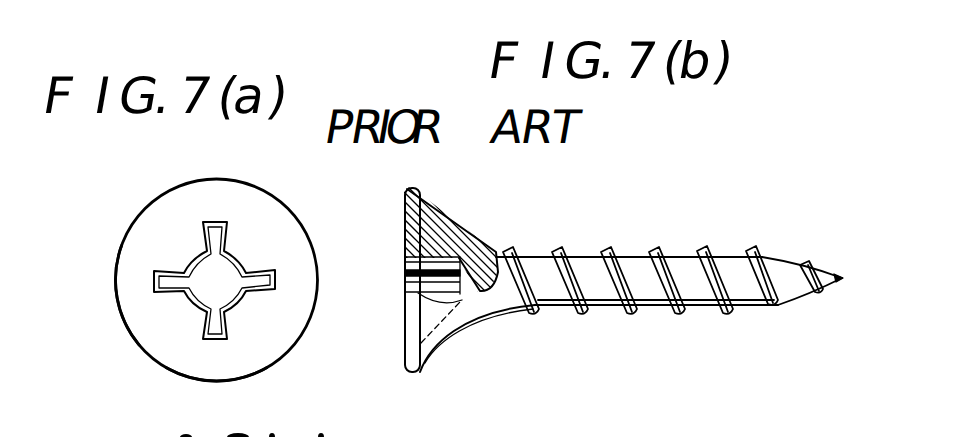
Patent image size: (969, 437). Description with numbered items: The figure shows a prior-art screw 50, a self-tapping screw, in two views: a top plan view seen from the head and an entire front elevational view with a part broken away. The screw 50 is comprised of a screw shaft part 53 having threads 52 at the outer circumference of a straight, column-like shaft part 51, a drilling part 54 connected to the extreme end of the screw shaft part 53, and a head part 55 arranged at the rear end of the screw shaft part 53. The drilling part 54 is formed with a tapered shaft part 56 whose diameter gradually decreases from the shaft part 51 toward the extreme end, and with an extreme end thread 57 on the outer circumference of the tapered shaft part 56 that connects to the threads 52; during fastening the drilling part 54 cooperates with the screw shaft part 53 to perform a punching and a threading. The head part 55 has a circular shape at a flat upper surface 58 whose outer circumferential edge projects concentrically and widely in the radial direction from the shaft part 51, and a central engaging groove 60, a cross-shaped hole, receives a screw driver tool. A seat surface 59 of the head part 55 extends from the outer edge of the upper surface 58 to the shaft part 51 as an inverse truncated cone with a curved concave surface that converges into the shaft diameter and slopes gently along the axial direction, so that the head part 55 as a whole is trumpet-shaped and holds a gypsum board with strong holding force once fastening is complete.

In FIG. 7a, the screw 50 is at (300, 213).
In FIG. 7b, the screw 50 is at (691, 242).
In FIG. 7b, the shaft part 51 is at (608, 300).
In FIG. 7b, the threads 52 is at (718, 309).
In FIG. 7b, the screw shaft part 53 is at (583, 250).
In FIG. 7b, the drilling part 54 is at (792, 252).
In FIG. 7a, the head part 55 is at (290, 359).
In FIG. 7b, the head part 55 is at (455, 212).
In FIG. 7b, the tapered shaft part 56 is at (790, 283).
In FIG. 7b, the extreme end thread 57 is at (820, 287).
In FIG. 7a, the upper surface 58 is at (148, 322).
In FIG. 7b, the upper surface 58 is at (406, 334).
In FIG. 7b, the seat surface 59 is at (455, 333).
In FIG. 7a, the engaging groove 60 is at (205, 282).
In FIG. 7b, the engaging groove 60 is at (406, 240).